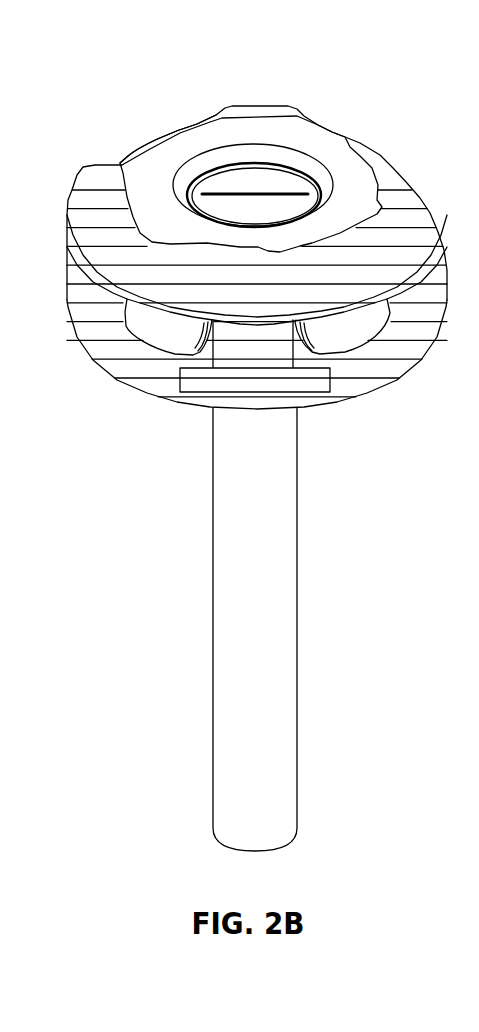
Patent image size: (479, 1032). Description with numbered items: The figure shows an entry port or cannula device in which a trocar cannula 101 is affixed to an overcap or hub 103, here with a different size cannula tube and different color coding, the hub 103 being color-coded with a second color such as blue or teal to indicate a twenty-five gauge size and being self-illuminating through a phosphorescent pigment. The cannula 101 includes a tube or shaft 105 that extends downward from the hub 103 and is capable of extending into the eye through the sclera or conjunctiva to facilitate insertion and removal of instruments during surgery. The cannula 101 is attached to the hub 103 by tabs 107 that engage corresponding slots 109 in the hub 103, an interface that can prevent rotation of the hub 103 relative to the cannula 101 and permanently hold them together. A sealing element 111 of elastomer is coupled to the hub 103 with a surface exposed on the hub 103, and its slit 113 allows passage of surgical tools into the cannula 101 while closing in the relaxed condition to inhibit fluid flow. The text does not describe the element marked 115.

The trocar cannula 101 is at (254, 434).
The hub 103 is at (254, 233).
The shaft 105 is at (213, 683).
The tabs 107 is at (167, 337).
The slots 109 is at (375, 345).
The sealing element 111 is at (363, 178).
The slit 113 is at (265, 190).
The lobe 115 is at (147, 138).